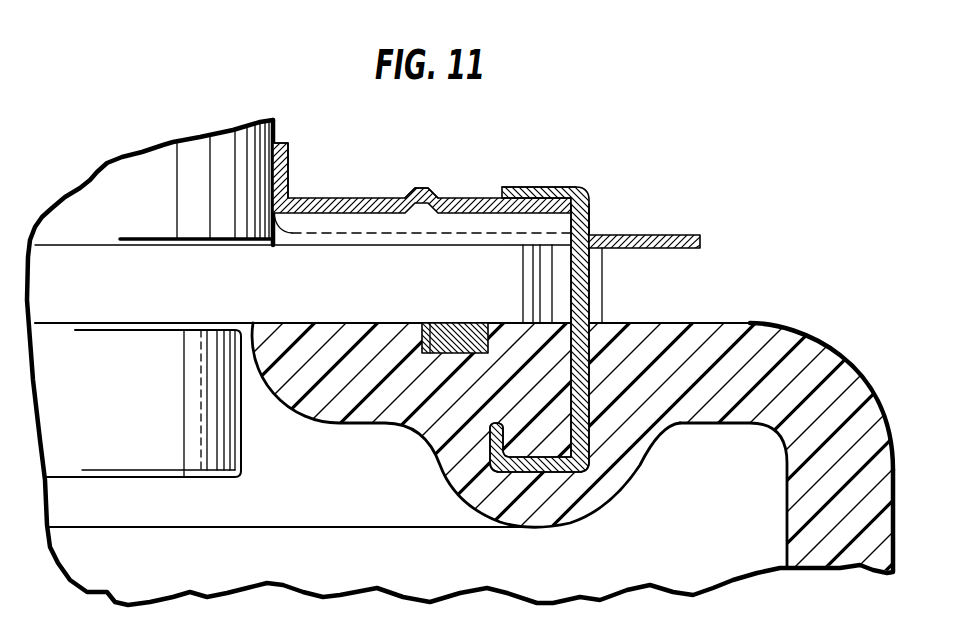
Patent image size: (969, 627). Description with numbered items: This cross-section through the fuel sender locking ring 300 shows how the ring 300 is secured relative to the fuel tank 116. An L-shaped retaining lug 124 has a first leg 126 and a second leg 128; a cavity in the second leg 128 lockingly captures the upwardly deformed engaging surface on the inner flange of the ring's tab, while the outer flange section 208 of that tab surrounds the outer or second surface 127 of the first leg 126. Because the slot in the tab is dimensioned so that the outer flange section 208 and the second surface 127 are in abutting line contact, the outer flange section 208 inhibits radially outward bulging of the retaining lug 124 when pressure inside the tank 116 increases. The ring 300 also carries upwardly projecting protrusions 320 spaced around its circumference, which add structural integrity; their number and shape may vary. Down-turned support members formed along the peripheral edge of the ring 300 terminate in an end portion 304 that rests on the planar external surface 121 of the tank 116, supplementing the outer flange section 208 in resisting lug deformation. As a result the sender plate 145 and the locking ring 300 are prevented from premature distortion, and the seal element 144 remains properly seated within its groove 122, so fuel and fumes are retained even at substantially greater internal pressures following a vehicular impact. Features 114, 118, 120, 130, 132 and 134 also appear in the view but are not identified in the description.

The tubular member 114 is at (192, 163).
The fuel tank 116 is at (837, 357).
The bore 118 is at (296, 392).
The chamber 120 is at (378, 491).
The planar external surface 121 is at (757, 323).
The groove 122 is at (484, 331).
The retaining lug 124 is at (588, 182).
The first leg 126 is at (598, 417).
The outer or second surface 127 is at (592, 225).
The second leg 128 is at (538, 187).
The retainer hook 130 is at (594, 437).
The tube end 132 is at (275, 118).
The tube flange 134 is at (289, 155).
The seal element 144 is at (444, 320).
The sender plate 145 is at (316, 300).
The outer flange section 208 is at (691, 234).
The locking ring 300 is at (466, 194).
The end portion 304 is at (606, 297).
The protrusions 320 is at (420, 187).